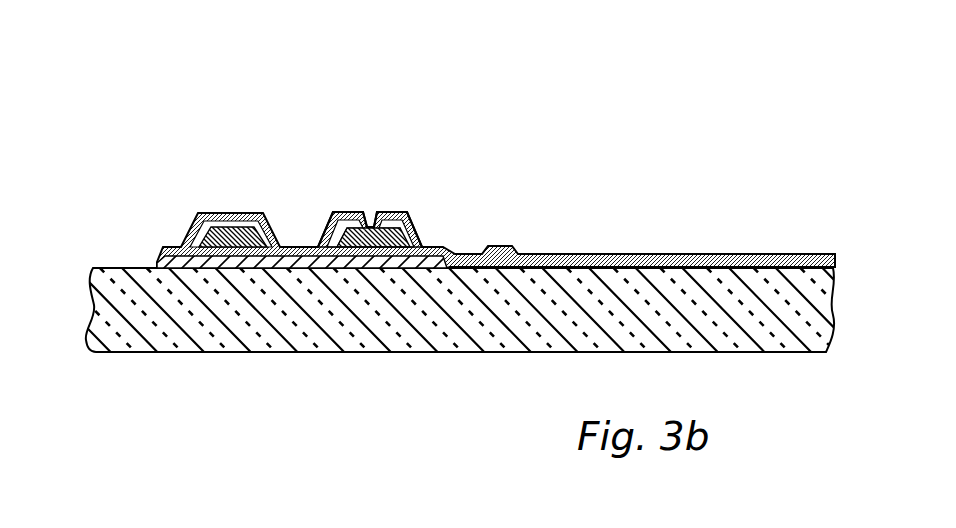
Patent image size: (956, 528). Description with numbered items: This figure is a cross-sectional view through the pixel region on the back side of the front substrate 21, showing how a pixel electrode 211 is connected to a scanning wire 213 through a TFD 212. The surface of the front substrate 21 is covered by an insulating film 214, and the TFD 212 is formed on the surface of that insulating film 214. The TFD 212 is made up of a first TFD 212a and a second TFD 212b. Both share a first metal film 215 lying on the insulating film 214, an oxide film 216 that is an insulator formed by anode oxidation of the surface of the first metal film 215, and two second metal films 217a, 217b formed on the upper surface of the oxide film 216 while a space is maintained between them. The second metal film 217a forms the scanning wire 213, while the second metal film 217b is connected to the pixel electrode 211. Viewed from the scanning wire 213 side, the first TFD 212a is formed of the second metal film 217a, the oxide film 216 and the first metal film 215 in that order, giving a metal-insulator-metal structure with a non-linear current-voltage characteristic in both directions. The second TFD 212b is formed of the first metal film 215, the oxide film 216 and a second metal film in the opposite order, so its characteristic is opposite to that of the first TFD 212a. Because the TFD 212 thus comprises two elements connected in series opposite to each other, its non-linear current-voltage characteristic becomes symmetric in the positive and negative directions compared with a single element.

The front substrate 21 is at (795, 322).
The pixel electrode 211 is at (563, 254).
The TFD (Thin Film Diode) 212 is at (441, 127).
The first TFD 212a is at (318, 195).
The second TFD 212b is at (426, 191).
The scanning wire 213 is at (237, 212).
The insulating film 214 is at (158, 259).
The first metal film 215 is at (372, 252).
The oxide film 216 is at (376, 213).
The second metal film 217a is at (353, 212).
The second metal film 217b is at (399, 212).